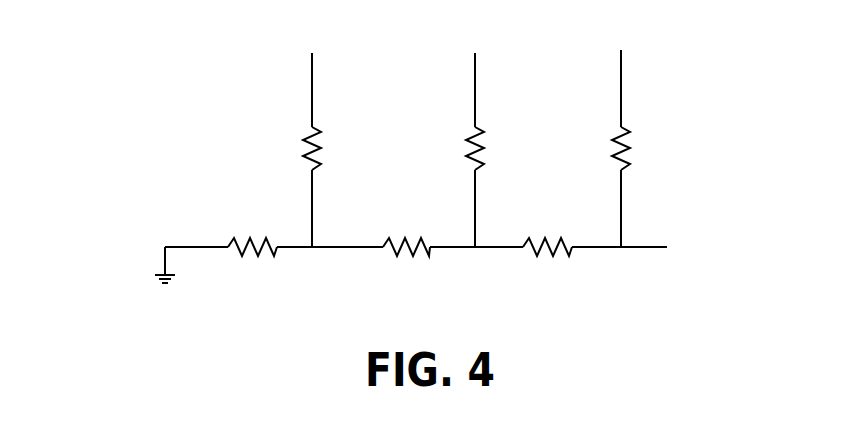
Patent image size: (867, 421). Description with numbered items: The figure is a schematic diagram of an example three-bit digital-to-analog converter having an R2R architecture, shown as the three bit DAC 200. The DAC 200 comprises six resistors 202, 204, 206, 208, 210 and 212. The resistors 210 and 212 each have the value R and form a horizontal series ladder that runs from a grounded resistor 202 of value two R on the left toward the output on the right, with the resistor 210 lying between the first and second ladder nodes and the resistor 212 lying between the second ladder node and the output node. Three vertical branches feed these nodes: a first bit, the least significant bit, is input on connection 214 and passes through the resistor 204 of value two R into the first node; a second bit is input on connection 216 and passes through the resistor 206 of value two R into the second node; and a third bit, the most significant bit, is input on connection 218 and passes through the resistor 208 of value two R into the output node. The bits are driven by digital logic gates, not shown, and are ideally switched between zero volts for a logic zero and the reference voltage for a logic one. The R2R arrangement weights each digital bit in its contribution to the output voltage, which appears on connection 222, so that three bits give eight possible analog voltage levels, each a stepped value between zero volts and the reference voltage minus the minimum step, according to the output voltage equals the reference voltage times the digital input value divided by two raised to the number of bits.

The 3 bit DAC 200 is at (142, 41).
The resistor 202 is at (248, 237).
The resistor 204 is at (318, 147).
The resistor 206 is at (480, 147).
The resistor 208 is at (626, 147).
The resistor 210 is at (418, 236).
The resistor 212 is at (562, 237).
The connection 214 is at (312, 88).
The connection 216 is at (475, 88).
The connection 218 is at (621, 86).
The connection 222 is at (648, 245).